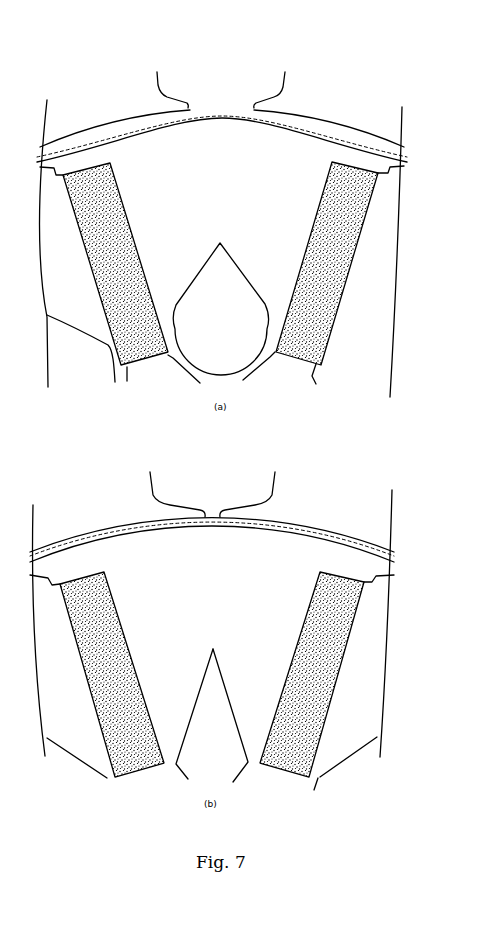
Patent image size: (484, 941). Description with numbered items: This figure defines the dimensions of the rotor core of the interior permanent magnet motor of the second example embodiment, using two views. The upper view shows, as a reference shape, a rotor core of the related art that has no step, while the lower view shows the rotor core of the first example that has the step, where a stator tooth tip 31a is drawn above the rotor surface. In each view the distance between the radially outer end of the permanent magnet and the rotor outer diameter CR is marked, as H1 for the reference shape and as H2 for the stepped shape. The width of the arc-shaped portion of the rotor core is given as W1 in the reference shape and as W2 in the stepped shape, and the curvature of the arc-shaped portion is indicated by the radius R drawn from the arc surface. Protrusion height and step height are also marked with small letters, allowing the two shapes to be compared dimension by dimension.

The stator tooth tip 31a is at (185, 506).
The width of arc-shaped portion W1 is at (341, 163).
The width of arc-shaped portion W2 is at (313, 572).
The distance between end of permanent magnet on outside in radial direction and roto H1 is at (81, 167).
The distance between end of permanent magnet on outside in radial direction and roto H2 is at (74, 578).
The rotor outer diameter CR is at (147, 132).
The curvature of arc-shaped portion R is at (135, 140).